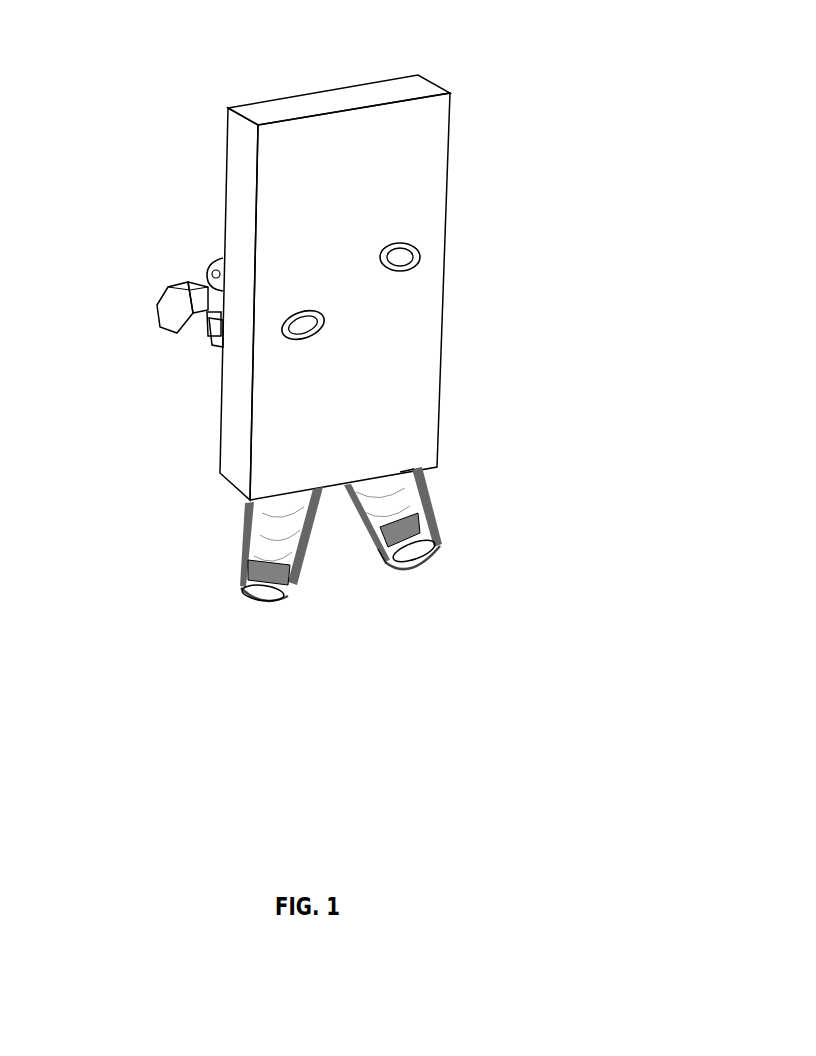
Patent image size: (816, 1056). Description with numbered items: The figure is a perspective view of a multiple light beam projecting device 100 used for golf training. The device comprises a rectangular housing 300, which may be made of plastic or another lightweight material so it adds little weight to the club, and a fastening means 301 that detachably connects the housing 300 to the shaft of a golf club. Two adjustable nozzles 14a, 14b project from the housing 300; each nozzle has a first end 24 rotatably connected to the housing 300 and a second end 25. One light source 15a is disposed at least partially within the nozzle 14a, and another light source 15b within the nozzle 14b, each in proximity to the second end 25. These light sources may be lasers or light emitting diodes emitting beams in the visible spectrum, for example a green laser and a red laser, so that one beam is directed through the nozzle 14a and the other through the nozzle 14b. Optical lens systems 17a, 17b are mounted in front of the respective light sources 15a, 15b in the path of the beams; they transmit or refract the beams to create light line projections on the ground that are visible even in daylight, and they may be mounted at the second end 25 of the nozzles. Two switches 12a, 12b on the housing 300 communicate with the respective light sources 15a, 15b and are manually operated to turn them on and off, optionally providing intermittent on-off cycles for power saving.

The multiple light beam projecting device 100 is at (498, 112).
The housing 300 is at (355, 181).
The fastening means 301 is at (148, 283).
The switch 12a is at (277, 343).
The switch 12b is at (430, 243).
The nozzle 14a is at (242, 525).
The nozzle 14b is at (433, 485).
The light source 15a is at (242, 590).
The light source 15b is at (422, 530).
The optical lens system 17a is at (265, 610).
The optical lens system 17b is at (423, 567).
The first end 24 is at (410, 470).
The second end 25 is at (391, 576).